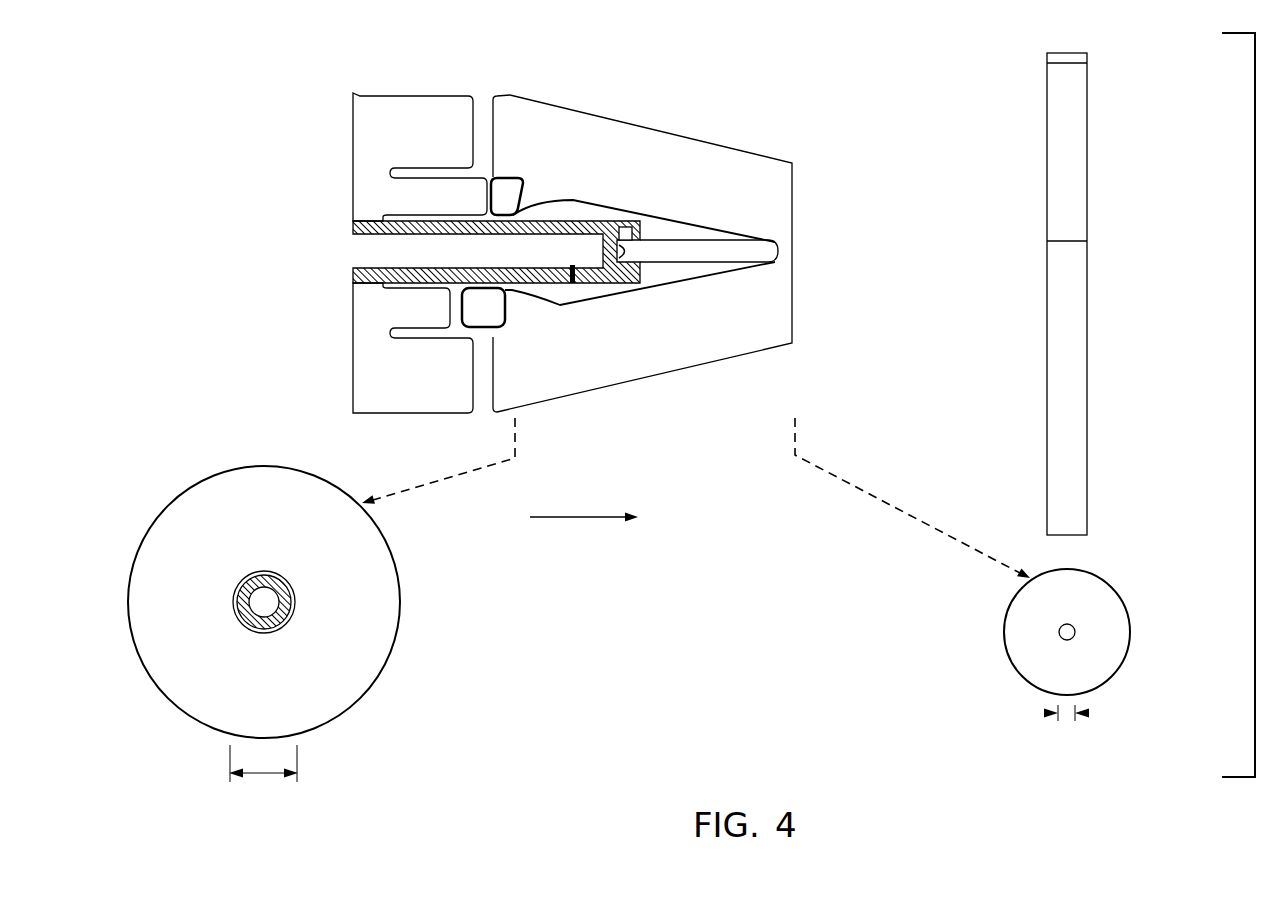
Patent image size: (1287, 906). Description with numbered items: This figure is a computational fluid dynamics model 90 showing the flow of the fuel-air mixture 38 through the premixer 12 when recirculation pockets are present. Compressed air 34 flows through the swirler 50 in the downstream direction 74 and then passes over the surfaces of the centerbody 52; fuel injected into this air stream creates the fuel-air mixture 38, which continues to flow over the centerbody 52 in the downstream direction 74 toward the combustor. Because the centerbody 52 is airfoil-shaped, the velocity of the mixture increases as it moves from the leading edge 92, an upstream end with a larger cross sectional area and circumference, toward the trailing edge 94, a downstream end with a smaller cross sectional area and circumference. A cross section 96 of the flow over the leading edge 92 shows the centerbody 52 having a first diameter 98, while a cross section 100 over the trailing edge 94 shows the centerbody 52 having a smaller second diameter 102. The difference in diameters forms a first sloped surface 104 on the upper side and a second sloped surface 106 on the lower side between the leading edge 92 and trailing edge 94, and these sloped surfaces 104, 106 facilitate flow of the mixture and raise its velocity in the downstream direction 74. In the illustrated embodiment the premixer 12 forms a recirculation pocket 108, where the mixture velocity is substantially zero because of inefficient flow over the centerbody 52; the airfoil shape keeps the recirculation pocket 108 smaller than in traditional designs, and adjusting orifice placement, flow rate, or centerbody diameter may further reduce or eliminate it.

The premixer 12 is at (492, 59).
The compressed air 34 is at (436, 122).
The fuel-air mixture 38 is at (599, 138).
The swirler 50 is at (383, 96).
The centerbody 52 is at (707, 308).
The downstream direction 74 is at (579, 522).
The computational fluid dynamics model 90 is at (283, 79).
The leading edge 92 is at (515, 185).
The trailing edge 94 is at (781, 229).
The cross section 96 is at (398, 586).
The first diameter 98 is at (261, 774).
The cross section 100 is at (1107, 583).
The second diameter 102 is at (1067, 722).
The first sloped surface 104 is at (663, 195).
The second sloped surface 106 is at (654, 295).
The recirculation pocket 108 is at (540, 238).